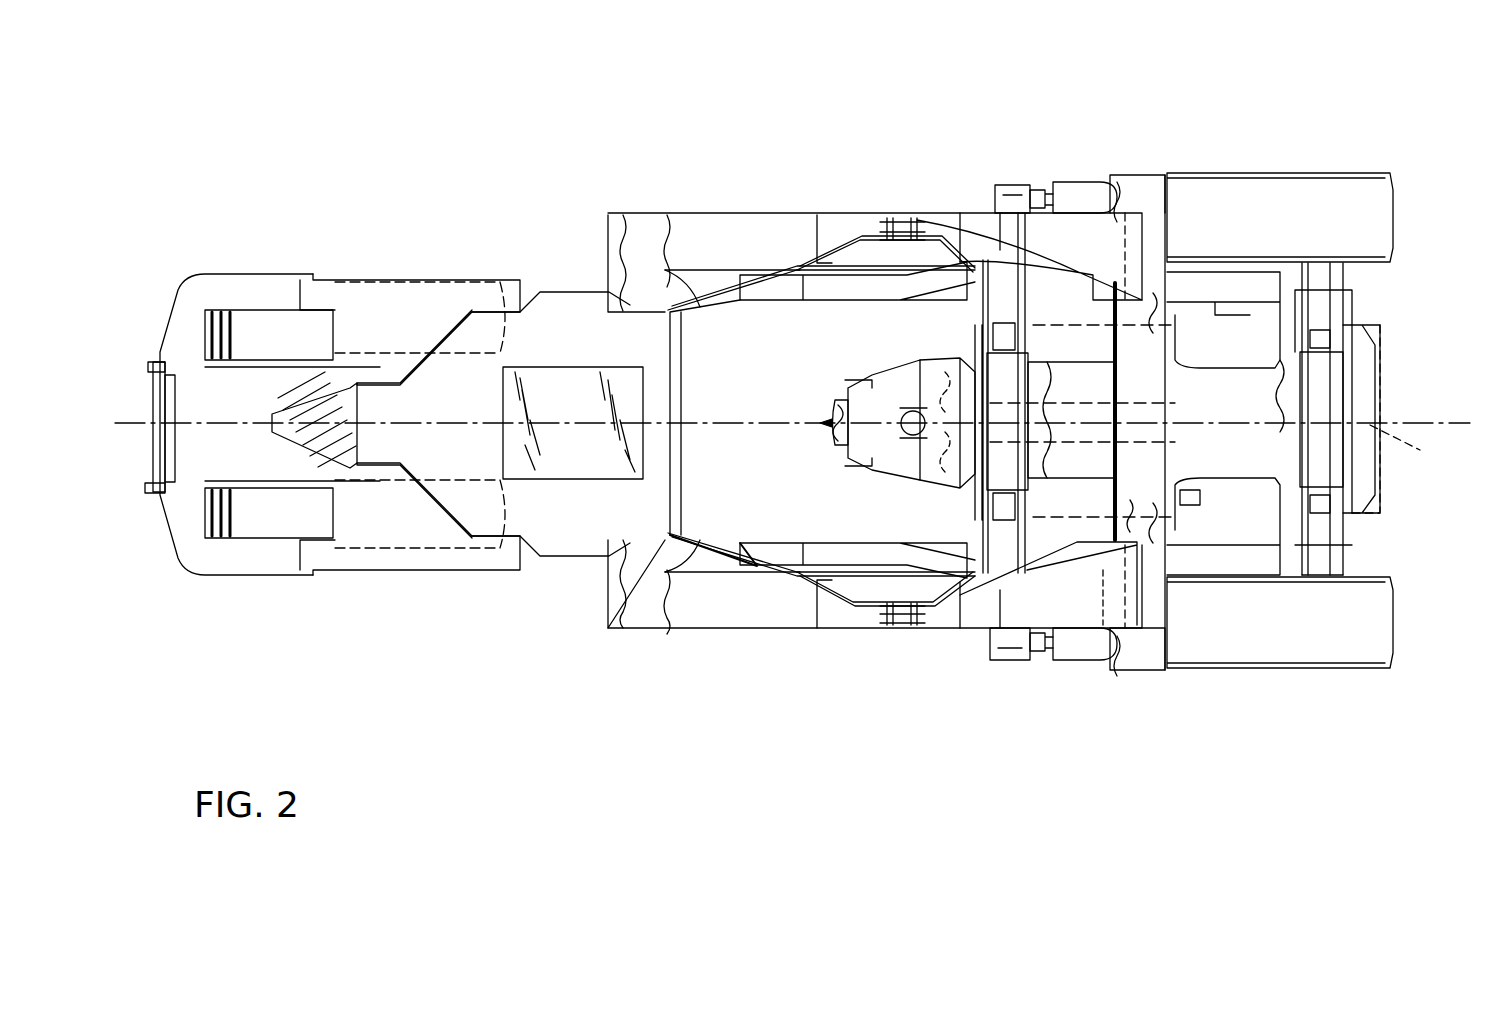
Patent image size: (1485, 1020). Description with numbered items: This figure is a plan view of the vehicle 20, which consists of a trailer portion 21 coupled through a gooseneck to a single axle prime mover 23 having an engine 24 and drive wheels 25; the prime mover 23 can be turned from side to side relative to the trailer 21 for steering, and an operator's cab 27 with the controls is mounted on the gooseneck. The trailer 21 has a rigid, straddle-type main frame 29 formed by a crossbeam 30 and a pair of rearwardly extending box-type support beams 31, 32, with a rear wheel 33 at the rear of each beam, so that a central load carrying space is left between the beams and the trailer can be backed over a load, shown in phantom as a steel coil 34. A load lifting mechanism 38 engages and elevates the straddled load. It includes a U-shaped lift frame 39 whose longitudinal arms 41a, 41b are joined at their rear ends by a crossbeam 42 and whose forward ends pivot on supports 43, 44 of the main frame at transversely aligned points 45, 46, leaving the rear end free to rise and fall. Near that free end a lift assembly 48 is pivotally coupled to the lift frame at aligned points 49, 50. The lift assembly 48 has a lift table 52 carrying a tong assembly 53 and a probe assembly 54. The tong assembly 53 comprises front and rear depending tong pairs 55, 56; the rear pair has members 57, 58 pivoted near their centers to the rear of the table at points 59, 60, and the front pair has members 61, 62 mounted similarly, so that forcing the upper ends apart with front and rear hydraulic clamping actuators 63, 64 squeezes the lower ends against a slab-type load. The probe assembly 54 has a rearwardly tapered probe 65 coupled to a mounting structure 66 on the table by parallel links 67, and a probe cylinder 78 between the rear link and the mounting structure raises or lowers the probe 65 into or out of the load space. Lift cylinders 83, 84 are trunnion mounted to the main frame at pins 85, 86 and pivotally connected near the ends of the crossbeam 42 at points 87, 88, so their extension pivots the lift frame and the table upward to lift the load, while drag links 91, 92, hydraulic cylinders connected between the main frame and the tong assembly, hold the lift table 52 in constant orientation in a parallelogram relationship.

The vehicle 20 is at (655, 115).
The trailer portion 21 is at (885, 160).
The prime mover 23 is at (443, 232).
The engine 24 is at (190, 382).
The drive wheels 25 is at (372, 303).
The operator's cab 27 is at (580, 404).
The main frame 29 is at (678, 632).
The crossbeam 30 is at (606, 628).
The support beam 31 is at (730, 622).
The support beam 32 is at (700, 222).
The rear wheels 33 is at (1275, 180).
The steel coil 34 is at (1375, 495).
The load lifting mechanism 38 is at (988, 640).
The lift frame 39 is at (1172, 383).
The arm 41a is at (975, 610).
The arm 41b is at (990, 213).
The crossbeam 42 is at (1135, 468).
The support 43 is at (895, 620).
The support 44 is at (895, 224).
The pivot point 45 is at (900, 625).
The pivot point 46 is at (925, 225).
The lift assembly 48 is at (1218, 350).
The pivot point 49 is at (1182, 520).
The pivot point 50 is at (1180, 330).
The lift table 52 is at (1092, 392).
The tong assembly 53 is at (1360, 315).
The probe assembly 54 is at (820, 423).
The front tong pair 55 is at (995, 298).
The rear tong pair 56 is at (1335, 312).
The tong member 57 is at (1320, 578).
The tong member 58 is at (1320, 290).
The pivot point 59 is at (1285, 500).
The pivot point 60 is at (1358, 340).
The tong member 61 is at (1008, 560).
The tong member 62 is at (1012, 308).
The front hydraulic clamping actuator 63 is at (960, 368).
The rear hydraulic clamping actuator 64 is at (1328, 385).
The probe 65 is at (1370, 425).
The mounting structure 66 is at (895, 478).
The link 67 is at (832, 430).
The probe cylinder and piston combination 78 is at (906, 410).
The lift cylinder 83 is at (1072, 660).
The lift cylinder 84 is at (1078, 182).
The pin 85 is at (1035, 660).
The pin 86 is at (1010, 185).
The pivot point 87 is at (1140, 672).
The pivot point 88 is at (1150, 175).
The drag link 91 is at (765, 553).
The drag link 92 is at (815, 292).